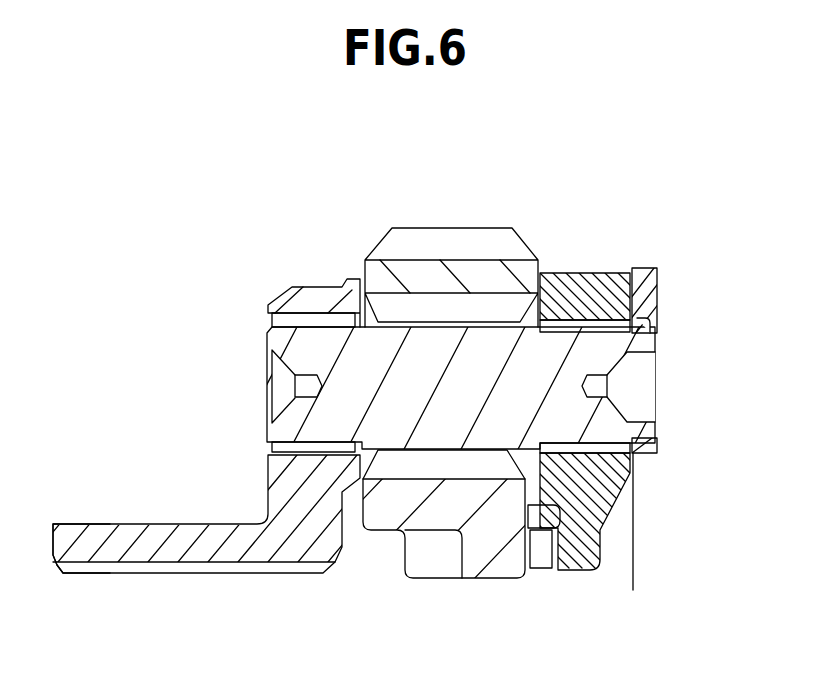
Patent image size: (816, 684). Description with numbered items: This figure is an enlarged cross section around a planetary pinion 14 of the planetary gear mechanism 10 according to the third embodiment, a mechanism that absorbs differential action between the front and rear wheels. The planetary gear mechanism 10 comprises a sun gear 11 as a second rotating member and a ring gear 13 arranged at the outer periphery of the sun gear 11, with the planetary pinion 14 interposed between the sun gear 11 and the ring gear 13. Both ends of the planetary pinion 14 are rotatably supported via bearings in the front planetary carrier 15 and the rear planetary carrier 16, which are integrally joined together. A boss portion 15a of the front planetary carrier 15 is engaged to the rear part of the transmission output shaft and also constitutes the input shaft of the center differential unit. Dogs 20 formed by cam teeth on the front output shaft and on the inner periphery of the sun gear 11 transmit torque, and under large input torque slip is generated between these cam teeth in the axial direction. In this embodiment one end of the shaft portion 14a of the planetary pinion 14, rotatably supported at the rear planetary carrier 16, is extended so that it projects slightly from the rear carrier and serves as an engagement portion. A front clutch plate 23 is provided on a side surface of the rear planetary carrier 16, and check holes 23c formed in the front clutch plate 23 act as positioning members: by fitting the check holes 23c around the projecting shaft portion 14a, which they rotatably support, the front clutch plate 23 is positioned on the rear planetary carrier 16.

The planetary gear mechanism 10 is at (674, 224).
The sun gear 11 is at (486, 567).
The ring gear 13 is at (448, 243).
The planetary pinion 14 is at (334, 340).
The shaft portion 14a is at (580, 318).
The front planetary carrier 15 is at (287, 498).
The boss portion 15a is at (108, 524).
The rear planetary carrier 16 is at (601, 555).
The dogs 20 is at (432, 567).
The front clutch plate 23 is at (642, 283).
The check hole 23c is at (650, 322).